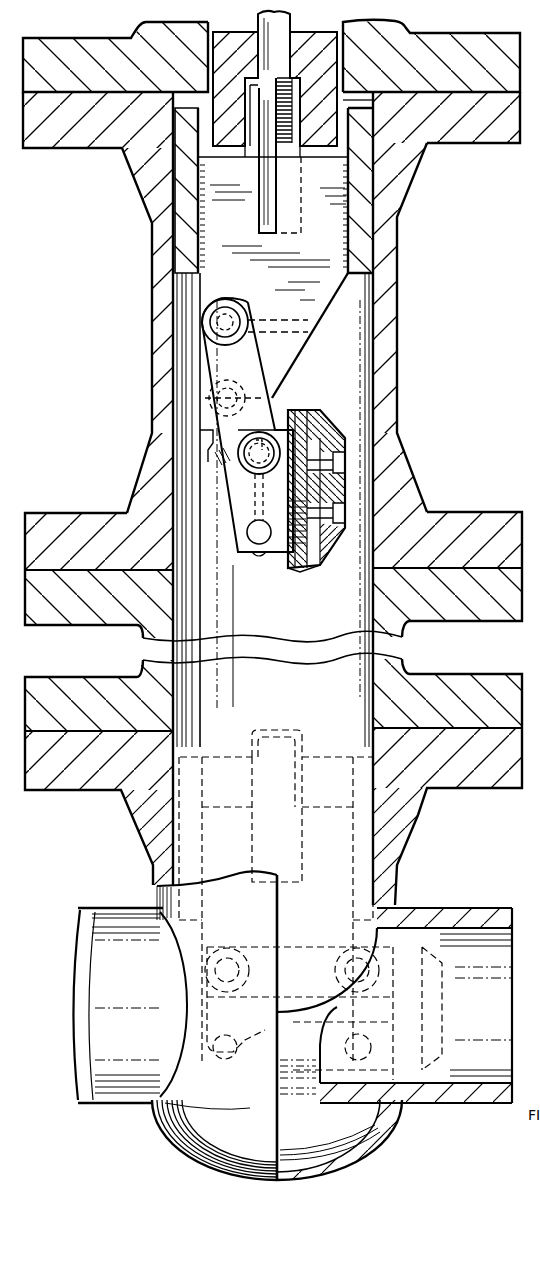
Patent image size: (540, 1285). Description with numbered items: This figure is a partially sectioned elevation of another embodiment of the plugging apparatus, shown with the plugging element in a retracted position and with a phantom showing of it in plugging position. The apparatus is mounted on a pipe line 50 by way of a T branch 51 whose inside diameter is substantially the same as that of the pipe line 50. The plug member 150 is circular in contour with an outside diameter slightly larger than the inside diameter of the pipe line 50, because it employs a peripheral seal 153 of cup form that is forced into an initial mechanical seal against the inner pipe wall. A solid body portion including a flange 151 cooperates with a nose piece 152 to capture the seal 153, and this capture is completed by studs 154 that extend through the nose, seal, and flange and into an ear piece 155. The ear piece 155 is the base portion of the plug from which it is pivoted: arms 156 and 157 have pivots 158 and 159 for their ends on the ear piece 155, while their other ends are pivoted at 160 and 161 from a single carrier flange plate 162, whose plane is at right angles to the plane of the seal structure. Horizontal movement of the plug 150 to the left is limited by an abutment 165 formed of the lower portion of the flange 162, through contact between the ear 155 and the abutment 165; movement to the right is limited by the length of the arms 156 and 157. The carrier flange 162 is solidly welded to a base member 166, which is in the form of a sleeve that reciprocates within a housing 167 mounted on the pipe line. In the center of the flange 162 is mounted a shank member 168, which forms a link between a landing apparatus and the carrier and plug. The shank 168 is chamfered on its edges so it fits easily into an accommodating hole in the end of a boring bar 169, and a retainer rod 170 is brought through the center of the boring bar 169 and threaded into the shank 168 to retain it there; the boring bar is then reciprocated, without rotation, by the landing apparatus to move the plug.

The pipe line 50 is at (453, 907).
The T branch 51 is at (410, 828).
The plug member 150 is at (357, 423).
The flange 151 is at (299, 410).
The nose piece 152 is at (322, 557).
The peripheral seal 153 is at (300, 572).
The studs 154 is at (347, 463).
The ear piece 155 is at (230, 553).
The arm 156 is at (210, 455).
The arm 157 is at (287, 359).
The pivot 158 is at (287, 397).
The pivot 159 is at (277, 563).
The pivot 160 is at (222, 300).
The pivot 161 is at (213, 397).
The carrier flange plate 162 is at (338, 300).
The abutment 165 is at (215, 423).
The base member 166 is at (372, 192).
The housing 167 is at (398, 250).
The shank member 168 is at (267, 234).
The boring bar 169 is at (405, 35).
The retainer rod 170 is at (292, 24).